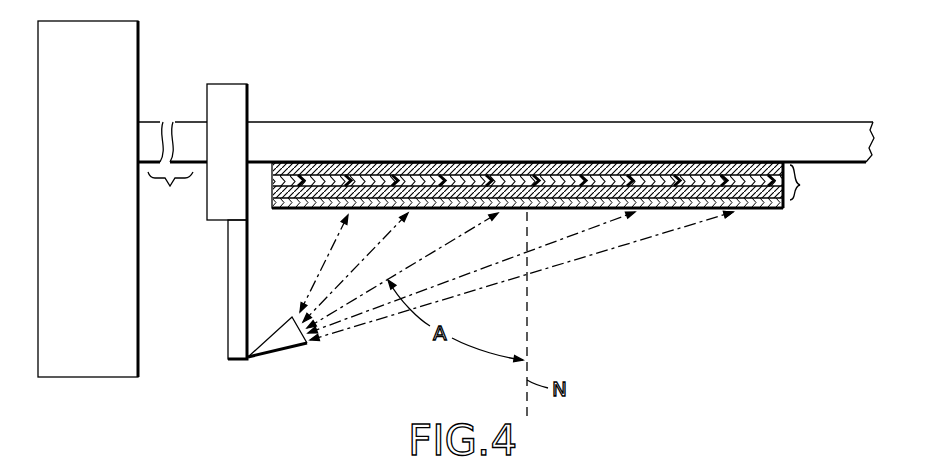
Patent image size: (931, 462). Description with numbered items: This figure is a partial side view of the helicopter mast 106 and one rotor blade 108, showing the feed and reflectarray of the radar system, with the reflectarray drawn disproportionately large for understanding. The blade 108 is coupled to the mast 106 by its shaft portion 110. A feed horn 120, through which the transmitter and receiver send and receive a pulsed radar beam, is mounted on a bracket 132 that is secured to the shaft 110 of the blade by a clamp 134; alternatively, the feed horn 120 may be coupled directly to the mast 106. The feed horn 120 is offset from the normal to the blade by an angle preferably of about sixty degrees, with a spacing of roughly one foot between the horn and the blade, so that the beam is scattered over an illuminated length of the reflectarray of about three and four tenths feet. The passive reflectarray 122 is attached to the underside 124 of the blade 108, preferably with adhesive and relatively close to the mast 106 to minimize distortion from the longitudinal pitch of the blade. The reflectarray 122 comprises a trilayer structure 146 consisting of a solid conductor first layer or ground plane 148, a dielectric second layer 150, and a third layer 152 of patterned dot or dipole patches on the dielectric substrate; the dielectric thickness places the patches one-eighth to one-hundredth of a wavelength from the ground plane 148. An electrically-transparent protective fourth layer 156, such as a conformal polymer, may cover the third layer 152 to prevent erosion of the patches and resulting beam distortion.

The mast 106 is at (100, 290).
The shaft portion 110 is at (152, 128).
The clamp 134 is at (228, 97).
The bracket 132 is at (237, 262).
The blade 108 is at (587, 138).
The underside 124 is at (853, 165).
The trilayer structure 146 is at (561, 166).
The first layer (ground plane) 148 is at (662, 160).
The dielectric second layer 150 is at (753, 178).
The third layer 152 is at (768, 208).
The protective fourth layer 156 is at (742, 210).
The feed horn 120 is at (285, 342).
The passive reflectarray 122 is at (616, 222).